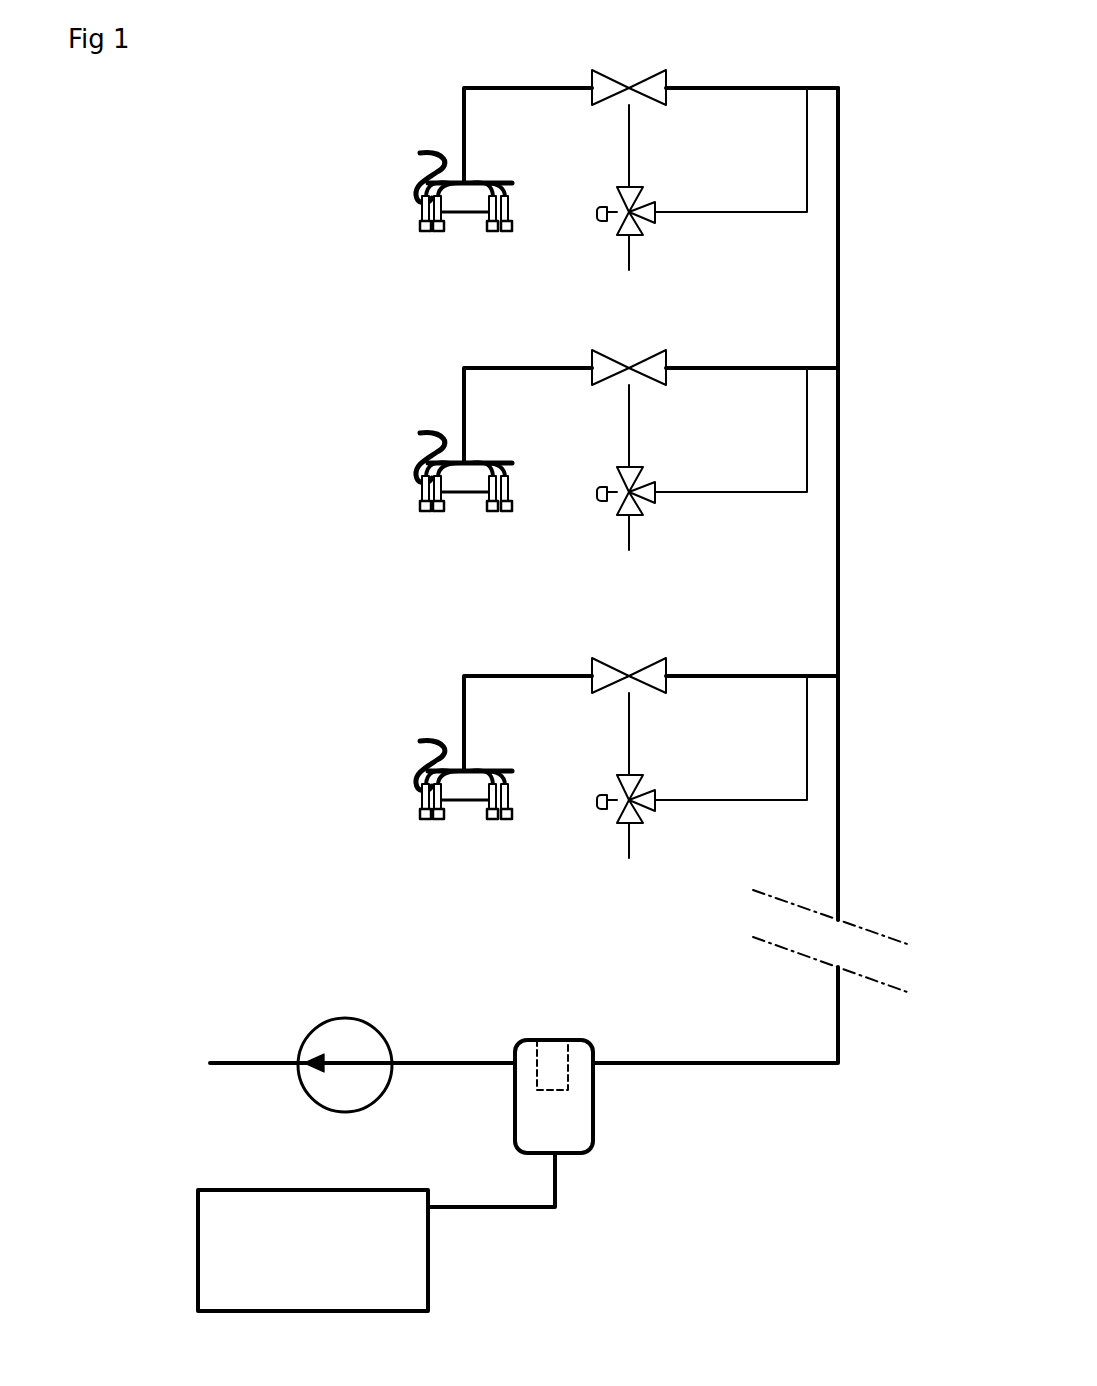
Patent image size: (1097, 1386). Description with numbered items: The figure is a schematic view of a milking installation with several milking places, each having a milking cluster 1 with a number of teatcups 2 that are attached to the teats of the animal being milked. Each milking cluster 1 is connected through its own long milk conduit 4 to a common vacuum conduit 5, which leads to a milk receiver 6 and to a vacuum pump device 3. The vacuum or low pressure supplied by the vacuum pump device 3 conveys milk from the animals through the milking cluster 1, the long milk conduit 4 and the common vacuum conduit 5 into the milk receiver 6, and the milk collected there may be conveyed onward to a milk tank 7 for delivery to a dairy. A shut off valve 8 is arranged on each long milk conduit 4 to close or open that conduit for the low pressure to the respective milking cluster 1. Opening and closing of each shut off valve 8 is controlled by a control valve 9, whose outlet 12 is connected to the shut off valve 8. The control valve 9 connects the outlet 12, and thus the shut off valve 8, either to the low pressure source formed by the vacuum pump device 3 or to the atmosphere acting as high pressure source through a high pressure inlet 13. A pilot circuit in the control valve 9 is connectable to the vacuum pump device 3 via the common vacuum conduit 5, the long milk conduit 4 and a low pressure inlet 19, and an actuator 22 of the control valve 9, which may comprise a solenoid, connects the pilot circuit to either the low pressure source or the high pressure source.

The milking cluster 1 is at (410, 499).
The teatcups 2 is at (422, 223).
The vacuum pump device 3 is at (315, 1043).
The long milk conduit 4 is at (463, 113).
The common vacuum conduit 5 is at (838, 890).
The milk receiver 6 is at (571, 1130).
The milk tank 7 is at (273, 1200).
The shut off valve 8 is at (657, 82).
The control valve 9 is at (633, 197).
The outlet 12 is at (629, 140).
The high pressure inlet 13 is at (629, 268).
The low pressure inlet 19 is at (768, 212).
The actuator 22 is at (600, 209).